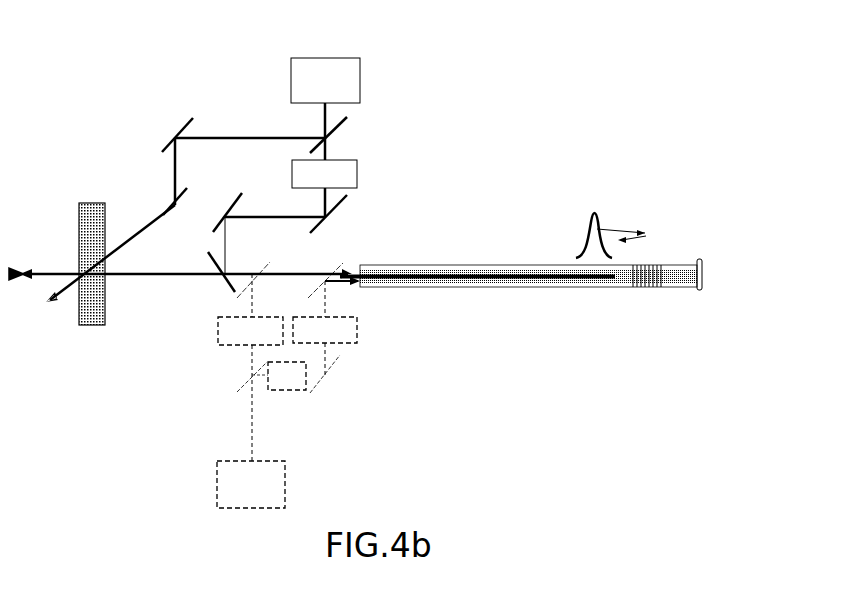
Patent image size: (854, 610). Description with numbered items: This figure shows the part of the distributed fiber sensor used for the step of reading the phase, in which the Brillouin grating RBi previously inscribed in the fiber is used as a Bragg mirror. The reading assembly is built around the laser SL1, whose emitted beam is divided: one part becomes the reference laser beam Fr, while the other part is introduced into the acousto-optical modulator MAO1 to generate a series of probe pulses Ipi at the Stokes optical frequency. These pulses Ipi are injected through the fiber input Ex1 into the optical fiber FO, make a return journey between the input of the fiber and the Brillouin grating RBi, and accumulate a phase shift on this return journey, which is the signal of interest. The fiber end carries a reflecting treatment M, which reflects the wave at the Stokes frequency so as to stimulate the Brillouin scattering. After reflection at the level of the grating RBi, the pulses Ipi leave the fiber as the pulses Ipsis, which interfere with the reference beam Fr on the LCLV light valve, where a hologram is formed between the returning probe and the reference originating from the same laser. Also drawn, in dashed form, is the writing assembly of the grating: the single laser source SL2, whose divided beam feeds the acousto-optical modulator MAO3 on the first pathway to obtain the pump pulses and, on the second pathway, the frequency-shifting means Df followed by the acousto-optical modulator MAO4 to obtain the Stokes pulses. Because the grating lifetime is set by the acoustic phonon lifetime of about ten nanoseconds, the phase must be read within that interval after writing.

The laser SL1 is at (362, 77).
The laser beam Fr is at (234, 138).
The acousto-optical modulator MAO1 is at (358, 178).
The series of pulses Ipi is at (321, 196).
The LCLV light valve LCLV is at (92, 203).
The pulses Ipsis is at (152, 278).
The first fiber end Ex1 is at (360, 265).
The optical fiber FO is at (455, 288).
The Brillouin grating RBi is at (650, 290).
The reflecting treatment M is at (711, 273).
The acousto-optical modulator MAO3 is at (218, 332).
The acousto-optical modulator MAO4 is at (358, 326).
The means of frequency shifting Df is at (286, 391).
The laser SL2 is at (285, 487).